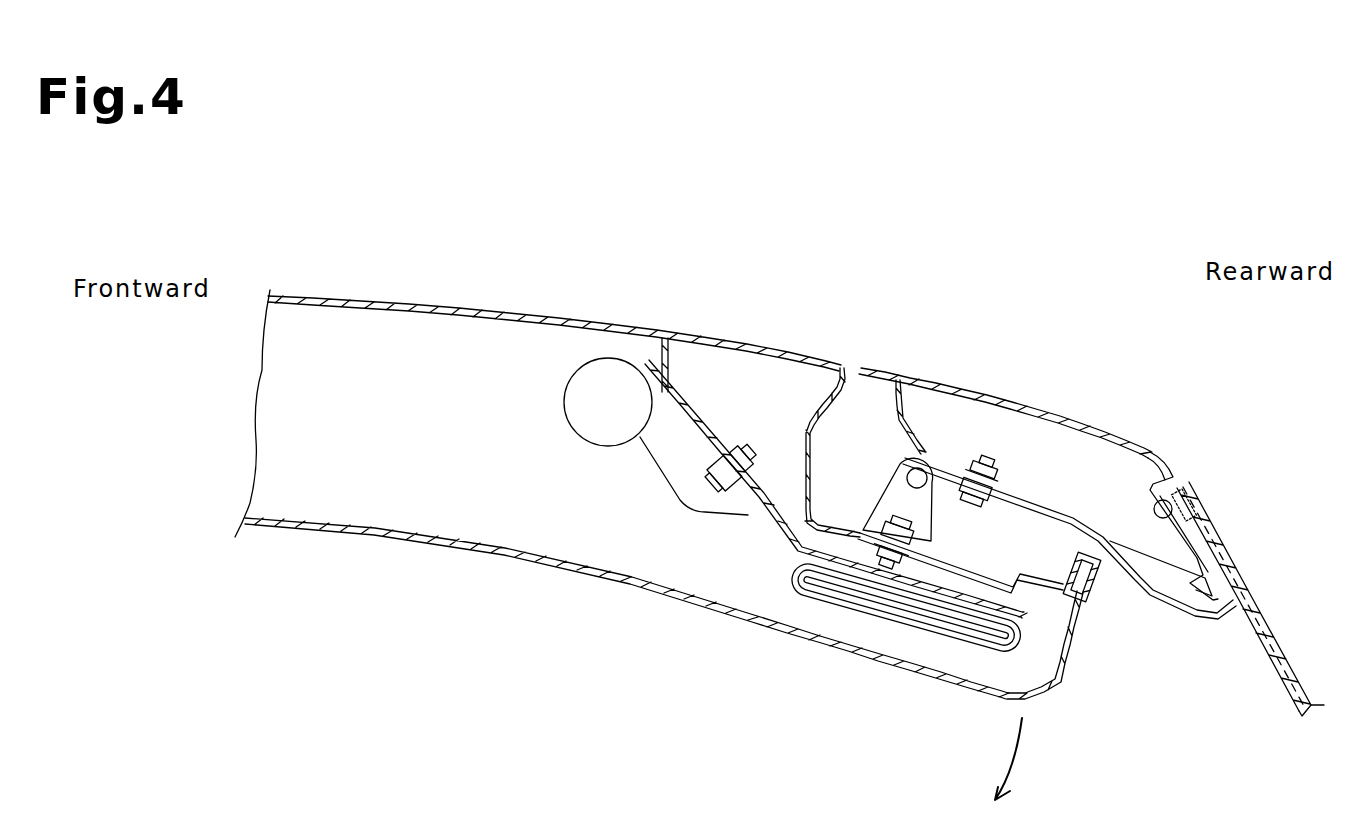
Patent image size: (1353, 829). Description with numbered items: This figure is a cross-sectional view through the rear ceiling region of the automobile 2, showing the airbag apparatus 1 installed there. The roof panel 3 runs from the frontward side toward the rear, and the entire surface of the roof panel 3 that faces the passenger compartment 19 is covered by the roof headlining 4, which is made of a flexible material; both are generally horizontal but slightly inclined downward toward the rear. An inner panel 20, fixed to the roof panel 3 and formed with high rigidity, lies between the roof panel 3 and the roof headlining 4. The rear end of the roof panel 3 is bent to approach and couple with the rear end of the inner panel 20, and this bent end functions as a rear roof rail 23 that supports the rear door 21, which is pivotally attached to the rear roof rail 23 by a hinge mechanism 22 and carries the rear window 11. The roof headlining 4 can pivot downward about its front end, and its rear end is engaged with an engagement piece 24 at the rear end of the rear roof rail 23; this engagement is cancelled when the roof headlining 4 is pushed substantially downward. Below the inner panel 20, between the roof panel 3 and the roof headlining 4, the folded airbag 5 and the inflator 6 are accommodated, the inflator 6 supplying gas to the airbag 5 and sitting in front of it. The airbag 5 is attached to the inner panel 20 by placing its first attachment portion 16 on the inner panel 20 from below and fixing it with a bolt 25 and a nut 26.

The airbag apparatus 1 is at (537, 429).
The automobile 2 is at (310, 247).
The roof panel 3 is at (742, 346).
The roof headlining 4 is at (500, 560).
The airbag 5 is at (1026, 652).
The inflator 6 is at (566, 384).
The rear window 11 is at (1272, 632).
The first attachment portion 16 is at (705, 460).
The passenger compartment 19 is at (602, 647).
The inner panel 20 is at (690, 387).
The rear door 21 is at (1164, 450).
The hinge mechanism 22 is at (885, 455).
The rear roof rail 23 is at (989, 578).
The engagement piece 24 is at (1107, 598).
The bolt 25 is at (757, 453).
The nut 26 is at (724, 454).